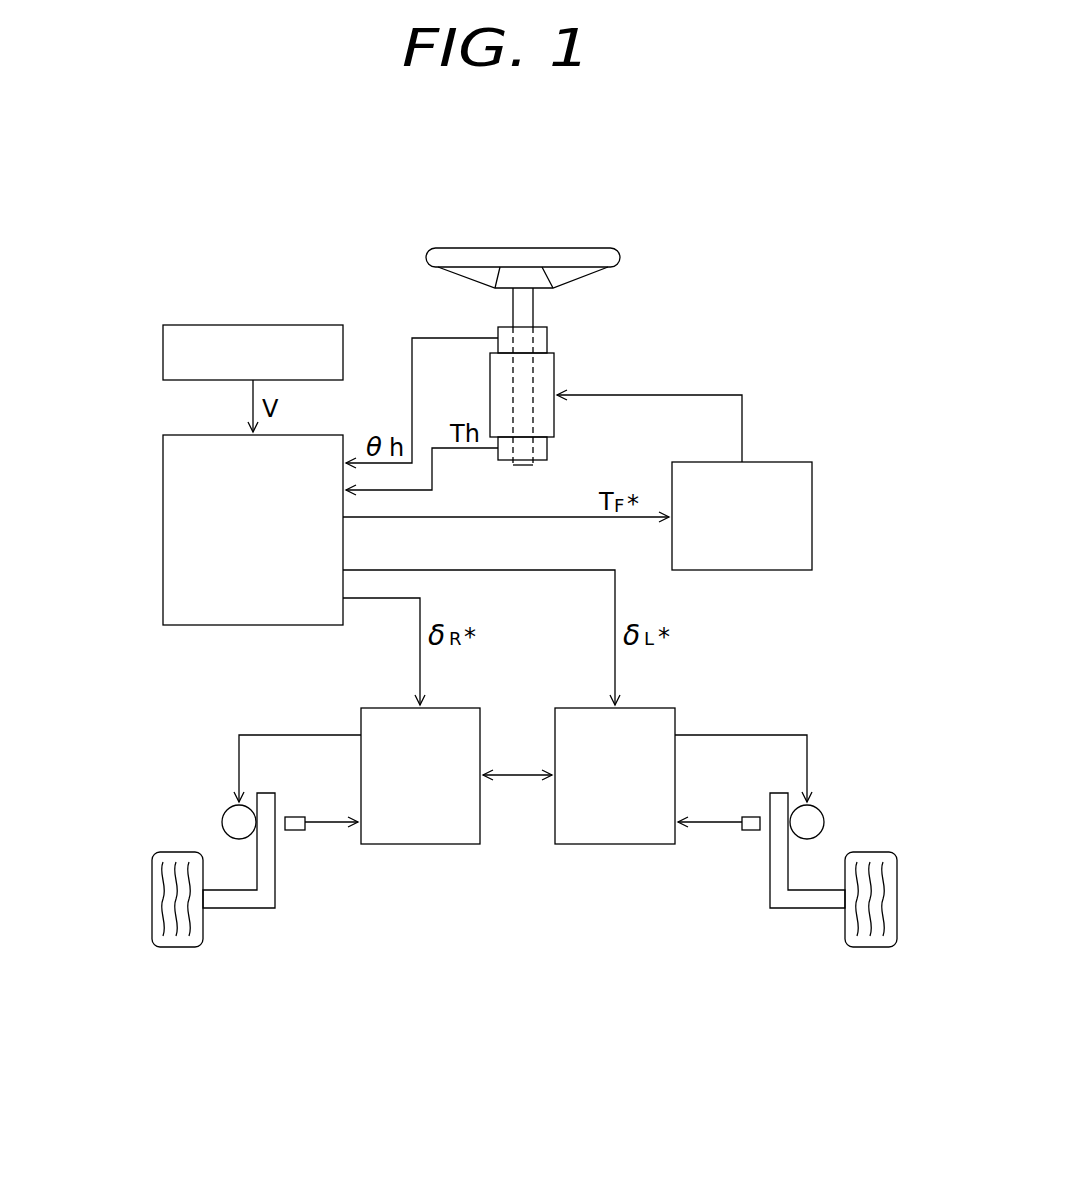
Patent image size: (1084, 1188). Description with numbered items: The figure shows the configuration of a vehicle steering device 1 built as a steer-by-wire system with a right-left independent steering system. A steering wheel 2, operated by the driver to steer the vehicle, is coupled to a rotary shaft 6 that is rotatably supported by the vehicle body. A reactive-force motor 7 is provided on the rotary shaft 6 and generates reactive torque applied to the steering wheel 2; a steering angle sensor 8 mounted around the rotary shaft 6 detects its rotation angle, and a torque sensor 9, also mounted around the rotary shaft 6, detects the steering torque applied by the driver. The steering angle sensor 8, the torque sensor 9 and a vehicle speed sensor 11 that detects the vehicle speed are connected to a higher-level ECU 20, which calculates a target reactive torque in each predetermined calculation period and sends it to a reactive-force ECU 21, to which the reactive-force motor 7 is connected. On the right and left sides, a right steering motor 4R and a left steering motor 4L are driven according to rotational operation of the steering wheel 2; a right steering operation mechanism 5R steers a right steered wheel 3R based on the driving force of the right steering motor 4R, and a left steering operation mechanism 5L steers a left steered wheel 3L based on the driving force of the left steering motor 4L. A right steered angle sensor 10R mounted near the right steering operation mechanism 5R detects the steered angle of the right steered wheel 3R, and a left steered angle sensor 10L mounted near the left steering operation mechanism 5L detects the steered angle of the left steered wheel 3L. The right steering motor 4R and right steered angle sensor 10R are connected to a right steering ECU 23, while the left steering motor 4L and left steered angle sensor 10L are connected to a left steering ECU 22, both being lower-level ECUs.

The vehicle steering device 1 is at (720, 260).
The steering wheel 2 is at (620, 258).
The rotary shaft 6 is at (533, 310).
The reactive-force motor 7 is at (554, 375).
The steering angle sensor 8 is at (547, 340).
The torque sensor 9 is at (547, 448).
The vehicle speed sensor 11 is at (163, 350).
The higher-level ECU 20 is at (163, 500).
The reactive-force ECU 21 is at (757, 570).
The left steering ECU 22 is at (615, 844).
The right steering ECU 23 is at (420, 844).
The right steered wheel 3R is at (175, 947).
The left steered wheel 3L is at (870, 947).
The right steering motor 4R is at (221, 822).
The left steering motor 4L is at (824, 822).
The right steering operation mechanism 5R is at (245, 908).
The left steering operation mechanism 5L is at (810, 908).
The right steered angle sensor 10R is at (297, 830).
The left steered angle sensor 10L is at (749, 830).